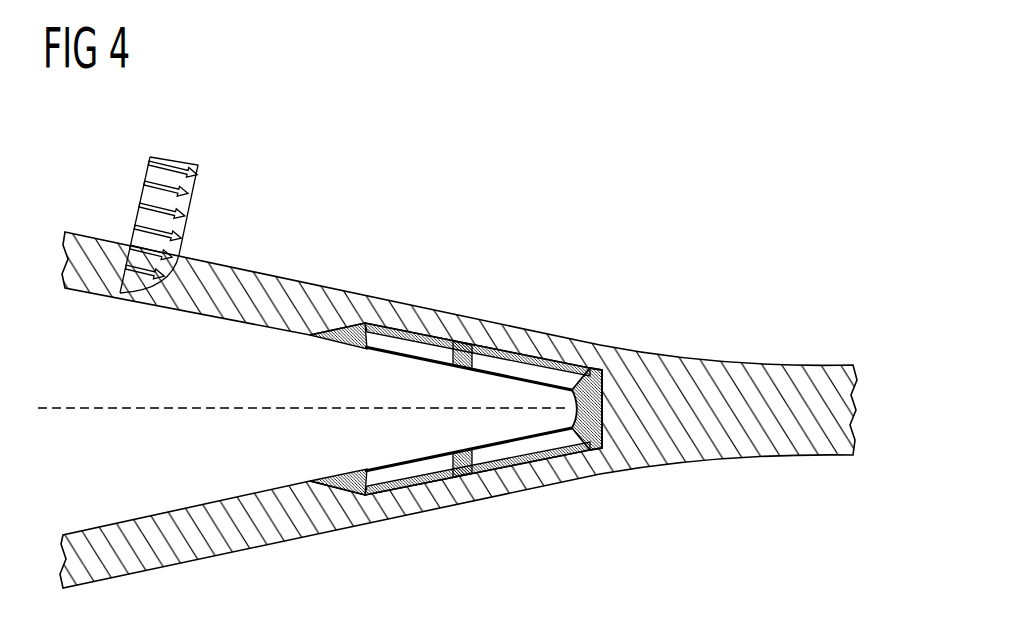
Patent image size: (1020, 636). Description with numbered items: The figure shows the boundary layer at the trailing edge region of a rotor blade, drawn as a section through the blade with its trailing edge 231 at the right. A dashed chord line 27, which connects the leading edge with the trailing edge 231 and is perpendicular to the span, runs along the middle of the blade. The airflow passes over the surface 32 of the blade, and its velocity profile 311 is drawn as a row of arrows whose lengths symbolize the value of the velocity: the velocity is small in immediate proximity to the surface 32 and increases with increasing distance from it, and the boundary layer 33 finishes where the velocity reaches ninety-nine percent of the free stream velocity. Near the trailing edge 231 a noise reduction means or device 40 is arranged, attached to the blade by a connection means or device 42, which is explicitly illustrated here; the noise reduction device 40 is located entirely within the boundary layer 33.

The chord line 27 is at (118, 406).
The surface 32 is at (283, 329).
The boundary layer 33 is at (274, 290).
The noise reduction means or device 40 is at (458, 408).
The connection means or device 42 is at (407, 472).
The trailing edge 231 is at (608, 432).
The velocity profile 311 is at (172, 160).